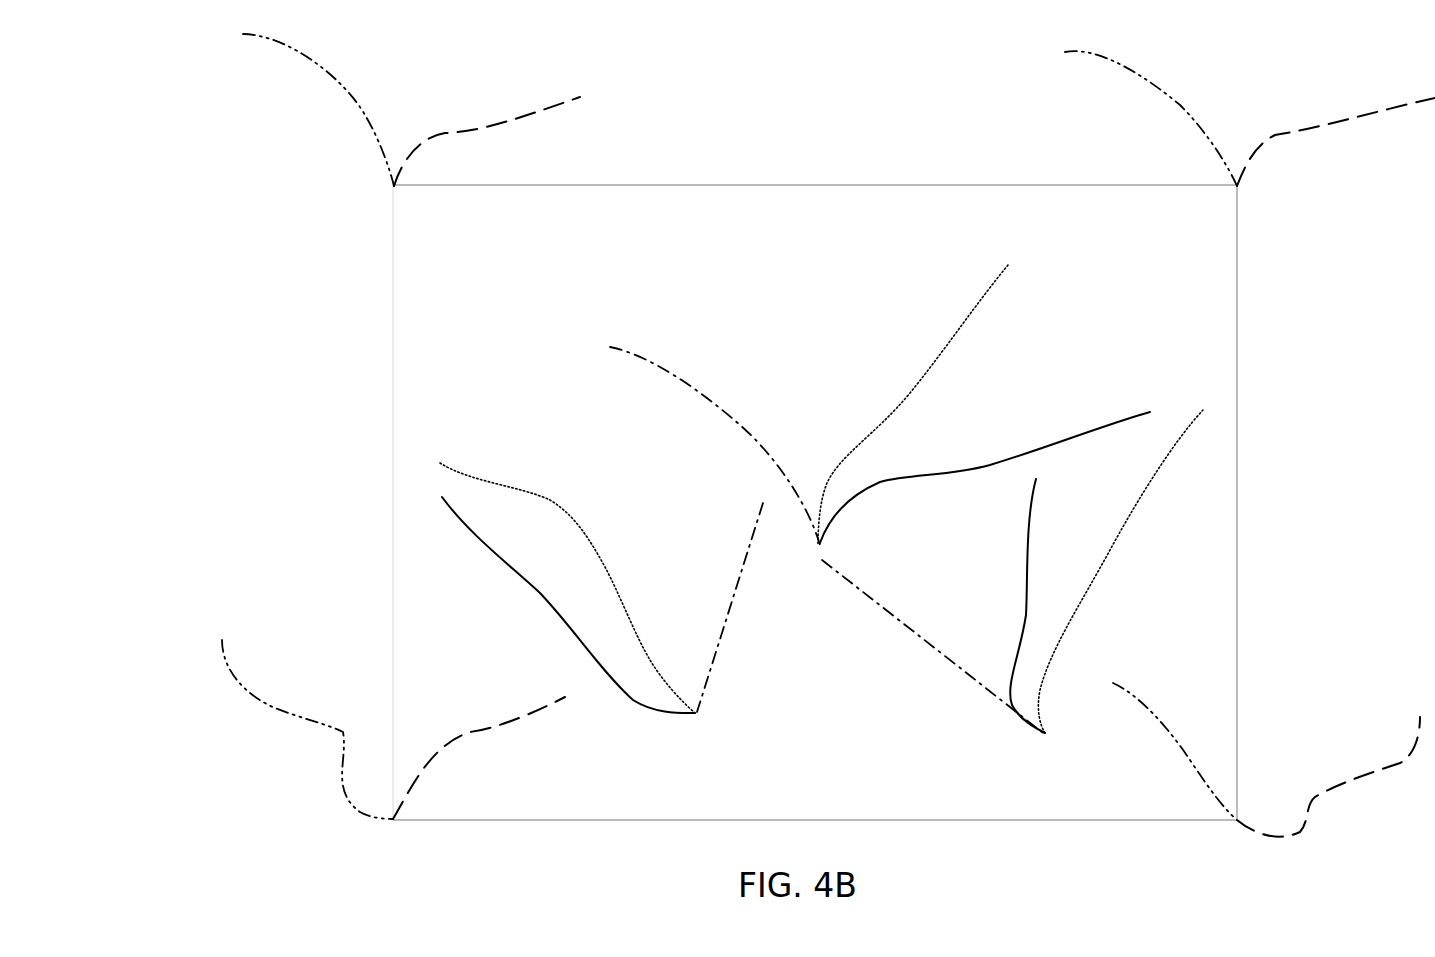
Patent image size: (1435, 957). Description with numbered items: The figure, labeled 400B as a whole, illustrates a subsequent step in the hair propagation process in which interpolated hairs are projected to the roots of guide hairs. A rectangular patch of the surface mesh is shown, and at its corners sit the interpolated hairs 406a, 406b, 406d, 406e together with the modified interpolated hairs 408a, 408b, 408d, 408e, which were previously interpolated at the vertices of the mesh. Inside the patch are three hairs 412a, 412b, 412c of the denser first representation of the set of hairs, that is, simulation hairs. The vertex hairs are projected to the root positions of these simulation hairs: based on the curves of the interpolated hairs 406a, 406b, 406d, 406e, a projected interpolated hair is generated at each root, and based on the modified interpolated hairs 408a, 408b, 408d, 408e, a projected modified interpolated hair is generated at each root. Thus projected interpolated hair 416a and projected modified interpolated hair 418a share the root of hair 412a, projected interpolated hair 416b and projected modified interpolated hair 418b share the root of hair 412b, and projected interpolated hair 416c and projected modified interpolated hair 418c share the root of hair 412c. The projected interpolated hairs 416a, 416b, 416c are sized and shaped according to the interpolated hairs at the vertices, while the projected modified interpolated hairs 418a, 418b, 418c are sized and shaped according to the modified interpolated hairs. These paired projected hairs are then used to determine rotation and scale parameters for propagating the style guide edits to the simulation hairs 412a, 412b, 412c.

The folded pad assembly 400B is at (206, 104).
The interpolated hair 406a is at (497, 127).
The interpolated hair 406b is at (1343, 128).
The interpolated hair 406d is at (468, 732).
The interpolated hair 406e is at (1308, 798).
The modified interpolated hair 408a is at (372, 108).
The modified interpolated hair 408b is at (1202, 115).
The modified interpolated hair 408d is at (345, 728).
The modified interpolated hair 408e is at (1187, 745).
The simulation hair 412a is at (940, 477).
The simulation hair 412b is at (503, 557).
The simulation hair 412c is at (1026, 612).
The projected interpolated hair 416a is at (940, 350).
The projected interpolated hair 416b is at (747, 560).
The projected interpolated hair 416c is at (1193, 420).
The projected modified interpolated hair 418a is at (750, 428).
The projected modified interpolated hair 418b is at (555, 497).
The projected modified interpolated hair 418c is at (925, 637).